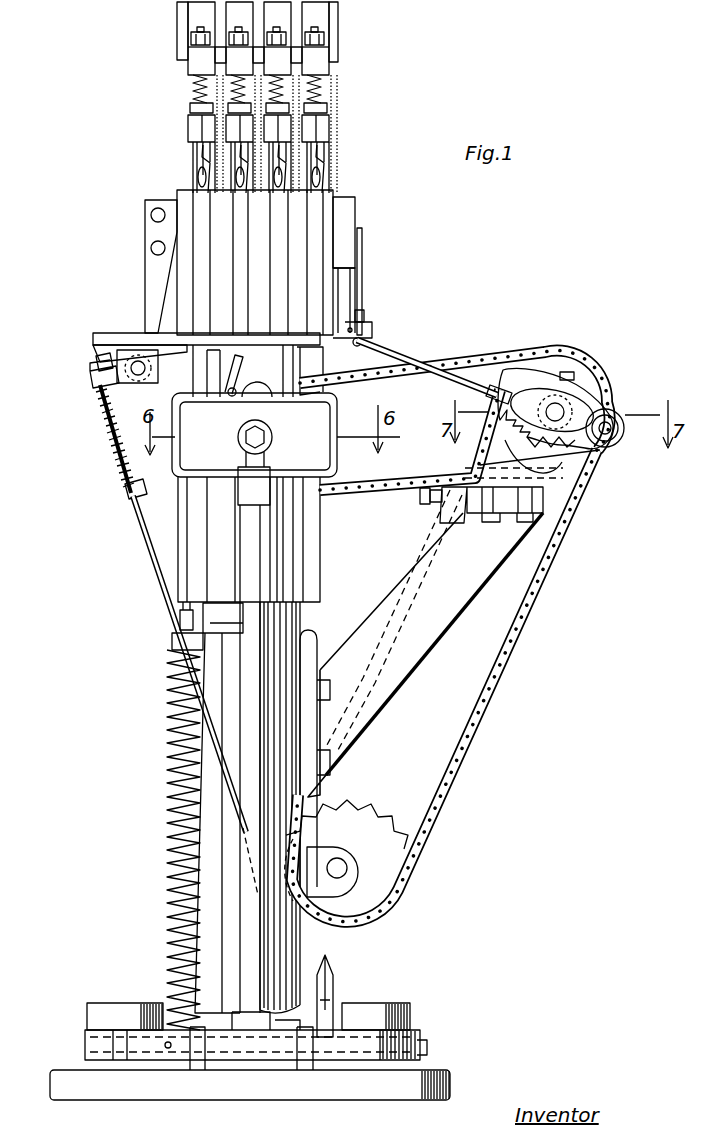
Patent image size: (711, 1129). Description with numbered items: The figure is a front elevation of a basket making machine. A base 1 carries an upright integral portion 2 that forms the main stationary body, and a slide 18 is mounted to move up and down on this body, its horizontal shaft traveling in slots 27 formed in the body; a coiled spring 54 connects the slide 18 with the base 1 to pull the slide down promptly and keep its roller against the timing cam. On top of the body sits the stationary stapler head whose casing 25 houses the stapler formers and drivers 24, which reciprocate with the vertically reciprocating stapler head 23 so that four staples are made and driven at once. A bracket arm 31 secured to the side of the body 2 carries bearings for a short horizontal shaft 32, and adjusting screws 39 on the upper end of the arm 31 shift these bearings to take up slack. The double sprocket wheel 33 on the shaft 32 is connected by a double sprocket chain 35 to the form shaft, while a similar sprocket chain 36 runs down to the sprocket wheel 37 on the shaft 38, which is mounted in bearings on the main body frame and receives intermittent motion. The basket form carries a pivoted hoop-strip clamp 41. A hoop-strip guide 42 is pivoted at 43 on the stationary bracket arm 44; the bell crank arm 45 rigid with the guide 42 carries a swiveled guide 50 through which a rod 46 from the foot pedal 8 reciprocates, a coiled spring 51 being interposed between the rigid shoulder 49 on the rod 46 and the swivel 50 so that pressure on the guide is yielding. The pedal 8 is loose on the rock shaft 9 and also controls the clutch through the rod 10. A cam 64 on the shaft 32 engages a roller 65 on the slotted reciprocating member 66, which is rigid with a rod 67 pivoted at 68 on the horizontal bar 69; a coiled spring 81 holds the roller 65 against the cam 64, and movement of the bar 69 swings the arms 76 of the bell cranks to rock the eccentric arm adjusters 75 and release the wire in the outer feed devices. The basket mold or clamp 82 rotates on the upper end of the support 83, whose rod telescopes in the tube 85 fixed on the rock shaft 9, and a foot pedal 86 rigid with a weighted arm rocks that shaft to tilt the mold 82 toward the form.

The base 1 is at (213, 1080).
The upright integral portion 2 is at (283, 668).
The foot pedal 8 is at (400, 1015).
The rock shaft 9 is at (85, 1045).
The rod 10 is at (335, 978).
The slide 18 is at (292, 555).
The vertically reciprocating stapler head 23 is at (336, 38).
The stapler formers and drivers 24 is at (236, 155).
The casing of the stationary stapler head 25 is at (310, 216).
The slots 27 is at (258, 388).
The bracket arm 31 is at (445, 620).
The short horizontal shaft 32 is at (556, 402).
The double sprocket wheel 33 is at (534, 372).
The double sprocket chain 35 is at (480, 358).
The sprocket chain or belt 36 is at (535, 593).
The sprocket wheel 37 is at (358, 828).
The shaft 38 is at (347, 867).
The adjusting screws 39 is at (428, 500).
The pivoted hoop-strip clamp 41 is at (238, 372).
The hoop-strip guide 42 is at (150, 338).
The pivot 43 is at (133, 362).
The stationary bracket arm 44 is at (152, 273).
The bell crank arm 45 is at (110, 420).
The rod 46 is at (152, 540).
The rigid shoulder 49 is at (127, 497).
The swiveled guide 50 is at (88, 380).
The coiled spring 51 is at (122, 452).
The coiled spring 54 is at (170, 812).
The cam 64 is at (600, 415).
The roller 65 is at (617, 432).
The slotted reciprocating member 66 is at (614, 440).
The rod 67 is at (440, 362).
The pivot 68 is at (362, 340).
The horizontal bar 69 is at (315, 371).
The eccentric arm adjuster 75 is at (363, 262).
The arms of the bell cranks 76 is at (372, 322).
The coiled spring 81 is at (568, 462).
The basket mold or clamp 82 is at (235, 443).
The support 83 is at (258, 490).
The tube 85 is at (248, 940).
The foot pedal 86 is at (102, 1012).